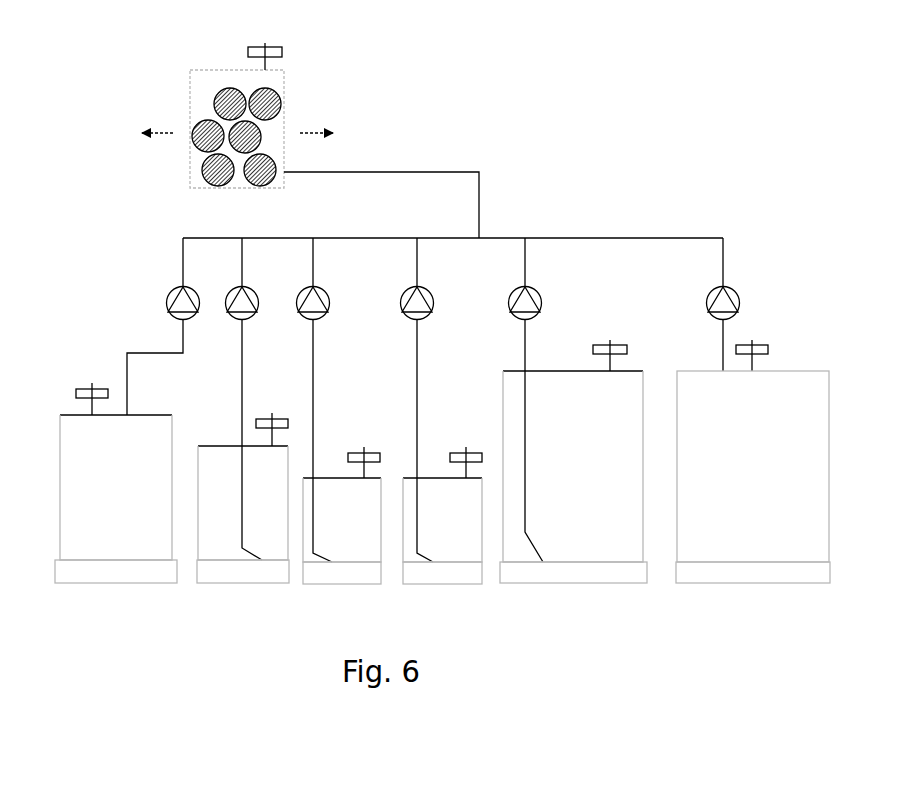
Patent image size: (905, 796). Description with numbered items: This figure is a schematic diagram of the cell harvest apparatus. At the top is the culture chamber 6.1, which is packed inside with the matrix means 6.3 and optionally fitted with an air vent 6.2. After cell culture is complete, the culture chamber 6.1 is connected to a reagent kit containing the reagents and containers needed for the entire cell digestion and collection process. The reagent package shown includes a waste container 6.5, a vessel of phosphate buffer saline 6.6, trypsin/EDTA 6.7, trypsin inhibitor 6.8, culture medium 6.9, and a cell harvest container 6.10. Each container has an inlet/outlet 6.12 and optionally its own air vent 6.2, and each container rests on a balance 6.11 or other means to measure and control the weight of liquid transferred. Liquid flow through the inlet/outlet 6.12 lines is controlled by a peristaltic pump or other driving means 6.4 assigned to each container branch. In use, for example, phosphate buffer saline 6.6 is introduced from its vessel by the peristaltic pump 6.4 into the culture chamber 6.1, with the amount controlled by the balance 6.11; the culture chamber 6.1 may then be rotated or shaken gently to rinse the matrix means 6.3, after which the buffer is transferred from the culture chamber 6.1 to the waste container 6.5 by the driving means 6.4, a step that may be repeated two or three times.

The culture chamber 6.1 is at (187, 181).
The air vent 6.2 is at (302, 39).
The matrix means 6.3 is at (221, 86).
The peristaltic pump or other driving means 6.4 is at (165, 301).
The waste container 6.5 is at (116, 487).
The phosphate buffer saline 6.6 is at (243, 503).
The trypsin/EDTA 6.7 is at (342, 520).
The trypsin inhibitor 6.8 is at (442, 520).
The culture medium 6.9 is at (573, 466).
The cell harvest container 6.10 is at (753, 466).
The balance 6.11 is at (101, 586).
The inlet/outlet 6.12 is at (412, 171).